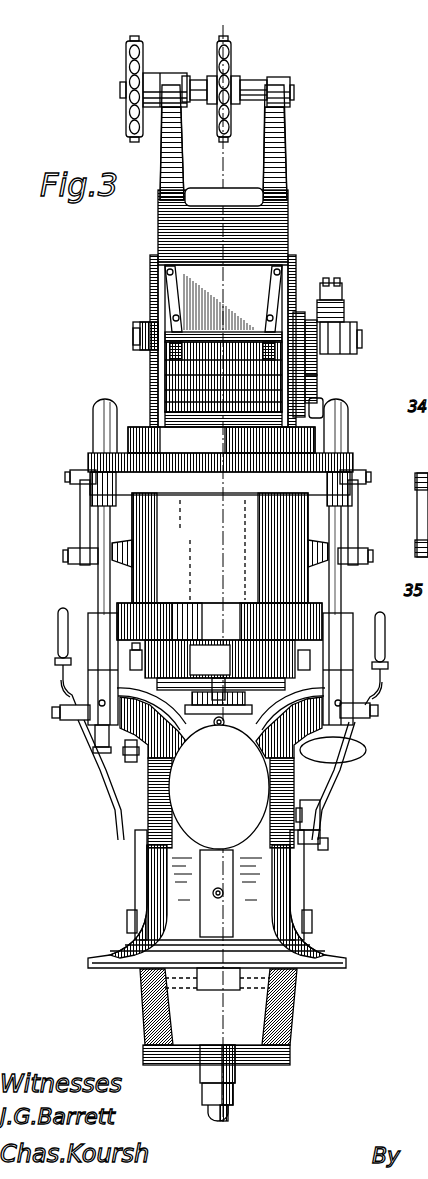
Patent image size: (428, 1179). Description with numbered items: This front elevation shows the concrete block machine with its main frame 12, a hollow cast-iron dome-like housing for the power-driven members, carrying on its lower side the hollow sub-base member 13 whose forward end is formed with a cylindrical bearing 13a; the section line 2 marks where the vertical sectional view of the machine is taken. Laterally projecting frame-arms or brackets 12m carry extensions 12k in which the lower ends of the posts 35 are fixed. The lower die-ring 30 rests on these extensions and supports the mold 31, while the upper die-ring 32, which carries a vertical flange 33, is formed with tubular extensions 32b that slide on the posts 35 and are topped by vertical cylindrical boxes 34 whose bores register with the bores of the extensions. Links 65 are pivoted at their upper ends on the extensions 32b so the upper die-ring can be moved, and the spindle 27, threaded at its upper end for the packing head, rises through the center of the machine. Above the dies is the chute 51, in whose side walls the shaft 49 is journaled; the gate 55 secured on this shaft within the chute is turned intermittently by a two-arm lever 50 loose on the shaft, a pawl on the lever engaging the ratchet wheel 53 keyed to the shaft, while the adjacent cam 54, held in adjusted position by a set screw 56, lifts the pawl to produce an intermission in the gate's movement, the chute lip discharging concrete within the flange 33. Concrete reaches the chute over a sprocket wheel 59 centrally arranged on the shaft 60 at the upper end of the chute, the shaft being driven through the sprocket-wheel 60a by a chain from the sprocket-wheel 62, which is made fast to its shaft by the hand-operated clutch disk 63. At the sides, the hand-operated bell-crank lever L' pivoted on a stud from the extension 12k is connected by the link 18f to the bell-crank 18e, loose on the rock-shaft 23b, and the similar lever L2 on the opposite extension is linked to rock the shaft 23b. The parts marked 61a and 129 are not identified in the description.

The section line 2 is at (240, 18).
The sprocket wheel 59 is at (232, 62).
The shaft 60 is at (255, 97).
The sprocket wheel 60a is at (128, 104).
The chute 51 is at (290, 236).
The gate 55 is at (223, 338).
The two-arm lever 50 is at (345, 298).
The shaft 49 is at (363, 334).
The ratchet wheel 53 is at (316, 362).
The cam 54 is at (318, 386).
The set screw 56 is at (307, 412).
The vertical flange 33 is at (136, 428).
The vertical cylindrical box 34 is at (93, 433).
The upper die ring 32 is at (220, 483).
The tubular extension 32b is at (116, 480).
The link 65 is at (80, 520).
The mold 31 is at (220, 548).
The lug 61a is at (128, 545).
The post 35 is at (98, 581).
The lower die ring 30 is at (46, 630).
The spindle 27 is at (220, 683).
The bell-crank lever L2 is at (56, 657).
The bell-crank hand-operated lever L' is at (373, 665).
The clutch wheel 63 is at (95, 741).
The sprocket wheel 62 is at (124, 752).
The frame arm 12m is at (155, 745).
The disk 129 is at (219, 787).
The frame extension 12k is at (345, 733).
The link 18f is at (335, 788).
The bell-crank 18e is at (322, 822).
The rock shaft 23b is at (322, 840).
The main frame 12 is at (290, 895).
The sub-base member 13 is at (290, 1003).
The cylindrical bearing 13a is at (236, 1080).